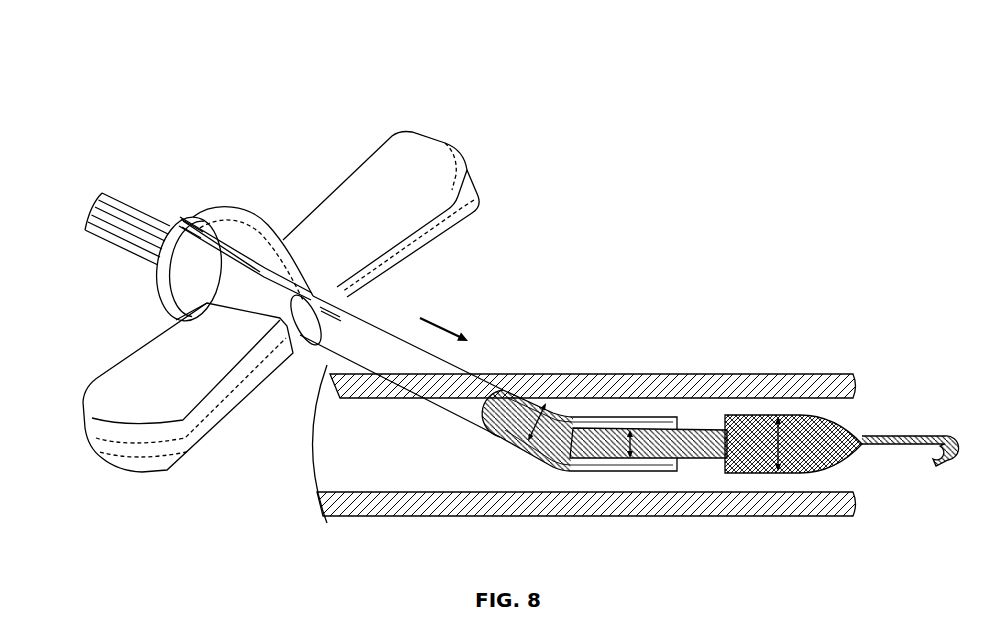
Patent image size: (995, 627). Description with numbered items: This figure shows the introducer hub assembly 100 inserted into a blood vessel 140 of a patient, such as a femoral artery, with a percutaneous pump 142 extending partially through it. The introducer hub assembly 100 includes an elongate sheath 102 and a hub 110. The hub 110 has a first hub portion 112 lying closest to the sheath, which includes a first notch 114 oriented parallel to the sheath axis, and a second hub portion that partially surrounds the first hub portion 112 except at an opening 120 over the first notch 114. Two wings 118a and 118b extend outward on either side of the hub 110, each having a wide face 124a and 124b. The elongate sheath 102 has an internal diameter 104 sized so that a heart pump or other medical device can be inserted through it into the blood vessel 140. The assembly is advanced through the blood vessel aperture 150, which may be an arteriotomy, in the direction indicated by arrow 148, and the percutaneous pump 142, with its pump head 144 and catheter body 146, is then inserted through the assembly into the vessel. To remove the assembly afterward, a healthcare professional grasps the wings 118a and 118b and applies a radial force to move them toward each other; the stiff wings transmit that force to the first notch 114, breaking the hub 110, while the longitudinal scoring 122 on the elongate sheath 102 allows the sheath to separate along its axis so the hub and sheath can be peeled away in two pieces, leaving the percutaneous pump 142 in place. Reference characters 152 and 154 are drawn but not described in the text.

The introducer hub assembly 100 is at (117, 78).
The elongate sheath 102 is at (472, 373).
The internal diameter 104 is at (559, 455).
The hub 110 is at (284, 220).
The first hub portion 112 is at (177, 263).
The first notch 114 is at (187, 220).
The first wing 118a is at (85, 427).
The second wing 118b is at (397, 133).
The opening 120 is at (207, 217).
The longitudinal scoring 122 is at (369, 315).
The wide face 124a is at (163, 403).
The wide face 124b is at (427, 162).
The blood vessel 140 is at (418, 457).
The percutaneous pump 142 is at (817, 487).
The pump head 144 is at (848, 463).
The catheter body 146 is at (707, 457).
The arrow 148 is at (456, 312).
The blood vessel aperture 150 is at (480, 360).
The needle sheath 152 is at (641, 447).
The distal body diameter 154 is at (785, 440).